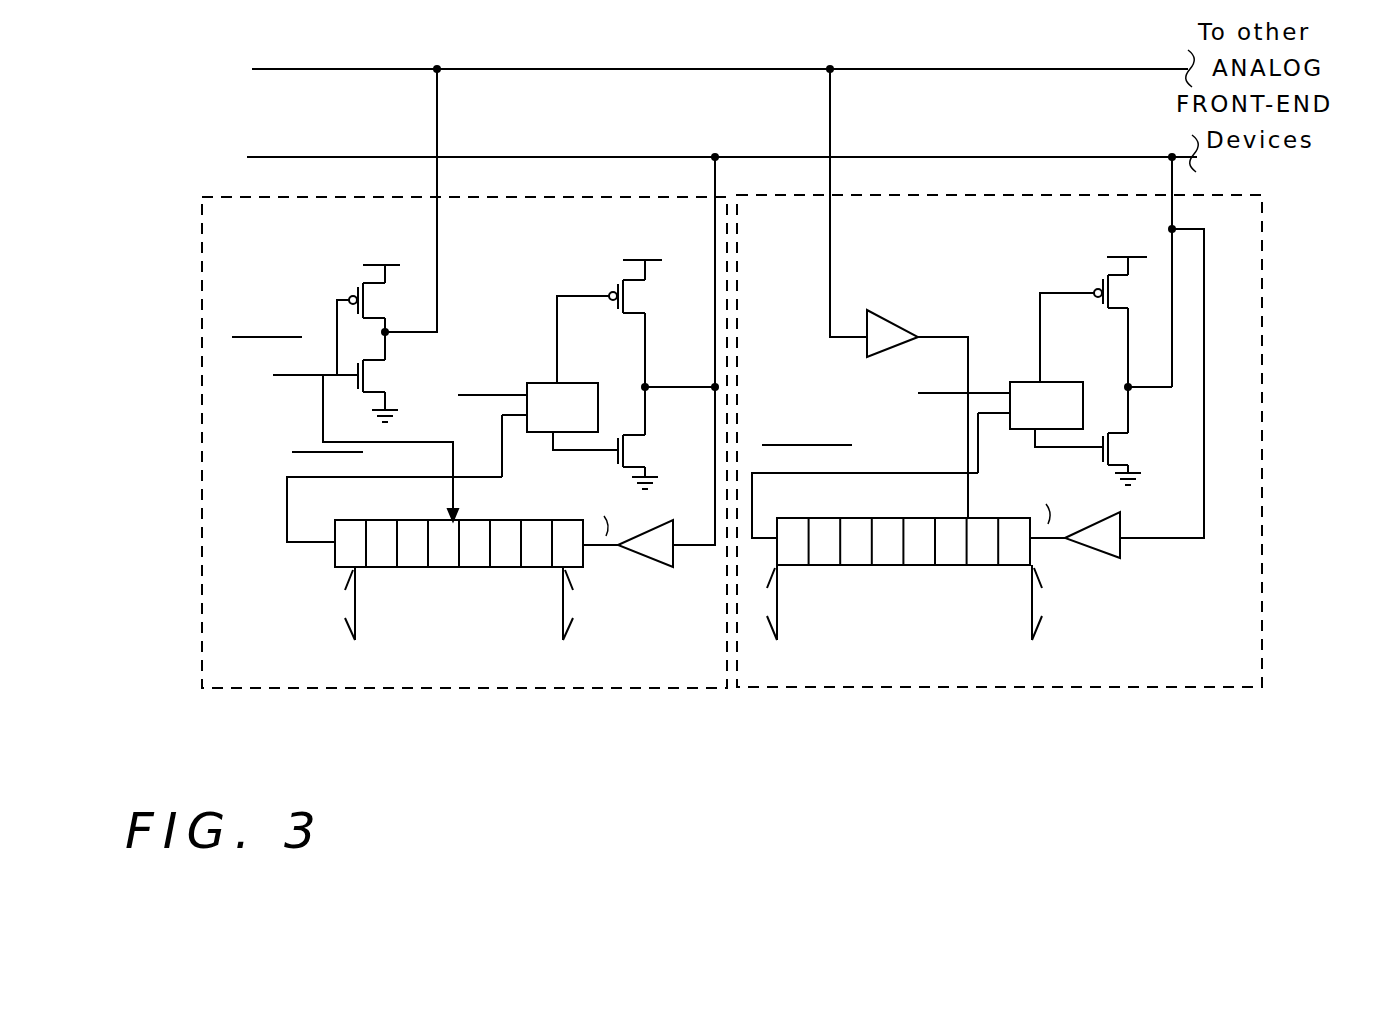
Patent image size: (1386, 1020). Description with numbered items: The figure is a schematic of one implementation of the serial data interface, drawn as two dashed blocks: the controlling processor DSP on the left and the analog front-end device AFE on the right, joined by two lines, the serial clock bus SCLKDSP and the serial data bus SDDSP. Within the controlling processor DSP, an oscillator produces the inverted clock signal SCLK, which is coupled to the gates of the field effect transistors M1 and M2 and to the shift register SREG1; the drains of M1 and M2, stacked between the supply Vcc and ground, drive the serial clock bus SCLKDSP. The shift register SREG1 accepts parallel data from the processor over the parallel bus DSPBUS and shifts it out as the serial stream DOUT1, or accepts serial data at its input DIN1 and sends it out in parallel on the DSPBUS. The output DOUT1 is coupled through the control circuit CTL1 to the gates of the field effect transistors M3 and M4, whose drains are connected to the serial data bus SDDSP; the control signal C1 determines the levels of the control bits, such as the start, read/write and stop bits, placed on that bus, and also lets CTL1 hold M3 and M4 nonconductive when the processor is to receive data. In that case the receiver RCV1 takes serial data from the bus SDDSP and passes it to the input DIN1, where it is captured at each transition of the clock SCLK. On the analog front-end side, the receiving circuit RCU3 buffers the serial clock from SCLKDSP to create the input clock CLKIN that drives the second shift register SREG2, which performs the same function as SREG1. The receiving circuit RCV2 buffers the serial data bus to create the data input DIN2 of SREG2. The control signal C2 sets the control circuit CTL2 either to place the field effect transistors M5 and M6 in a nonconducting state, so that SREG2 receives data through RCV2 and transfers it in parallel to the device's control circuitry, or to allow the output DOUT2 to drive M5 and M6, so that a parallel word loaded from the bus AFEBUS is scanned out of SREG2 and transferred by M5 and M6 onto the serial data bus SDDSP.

The serial clock bus SCLKDSP is at (659, 193).
The serial data bus SDDSP is at (667, 340).
The controlling processor DSP is at (464, 442).
The analog front-end device AFE is at (999, 441).
The supply voltage Vcc is at (755, 256).
The field effect transistor M1 is at (342, 390).
The field effect transistor M2 is at (374, 329).
The field effect transistor M3 is at (612, 460).
The field effect transistor M4 is at (638, 357).
The field effect transistor M5 is at (1096, 457).
The field effect transistor M6 is at (1106, 354).
The inverted clock signal SCLK is at (345, 429).
The control circuit CTL1 is at (562, 410).
The control circuit CTL2 is at (1046, 408).
The control signal C1 is at (492, 434).
The control signal C2 is at (964, 433).
The serial data output DOUT1 is at (394, 495).
The serial data output DOUT2 is at (865, 491).
The shift register SREG1 is at (459, 529).
The second shift register SREG2 is at (903, 528).
The serial data input DIN1 is at (620, 513).
The data input DIN2 is at (1070, 500).
The receiver RCV1 is at (644, 559).
The receiving circuit RCV2 is at (1091, 550).
The receiving circuit RCU3 is at (887, 315).
The input clock CLKIN is at (959, 413).
The parallel bus DSPBUS is at (459, 603).
The parallel bus AFEBUS is at (904, 602).